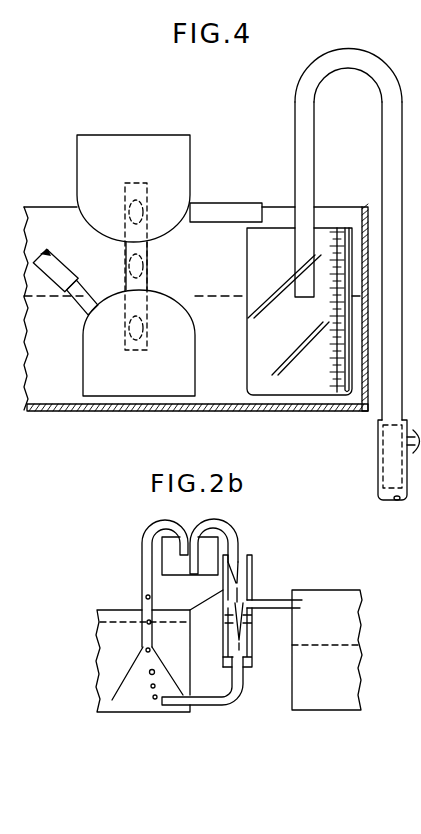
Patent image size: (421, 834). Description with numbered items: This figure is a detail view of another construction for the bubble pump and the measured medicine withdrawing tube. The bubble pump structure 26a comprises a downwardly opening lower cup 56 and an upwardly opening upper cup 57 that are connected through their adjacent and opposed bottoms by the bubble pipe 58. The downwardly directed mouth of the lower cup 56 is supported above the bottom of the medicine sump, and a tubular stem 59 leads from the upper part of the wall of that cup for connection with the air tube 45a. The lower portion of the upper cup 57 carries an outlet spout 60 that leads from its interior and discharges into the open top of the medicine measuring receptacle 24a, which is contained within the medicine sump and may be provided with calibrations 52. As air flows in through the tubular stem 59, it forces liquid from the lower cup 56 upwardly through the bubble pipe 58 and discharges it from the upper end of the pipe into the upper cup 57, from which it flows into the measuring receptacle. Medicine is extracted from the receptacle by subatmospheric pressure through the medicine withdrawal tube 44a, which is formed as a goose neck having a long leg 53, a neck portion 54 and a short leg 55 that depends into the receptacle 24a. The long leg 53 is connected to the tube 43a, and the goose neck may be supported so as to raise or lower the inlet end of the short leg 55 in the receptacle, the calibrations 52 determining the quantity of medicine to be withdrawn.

The bubble pump structure 26a is at (120, 247).
The upper cup 57 is at (145, 145).
The bubble pipe 58 is at (127, 255).
The lower cup 56 is at (98, 368).
The outlet spout 60 is at (220, 207).
The air tube 45a is at (55, 262).
The tubular stem 59 is at (82, 305).
The medicine measuring receptacle 24a is at (260, 249).
The calibrations 52 is at (338, 340).
The medicine withdrawal tube 44a is at (332, 219).
The neck portion 54 is at (360, 58).
The short leg 55 is at (310, 145).
The long leg 53 is at (390, 176).
The tube 43a is at (386, 484).